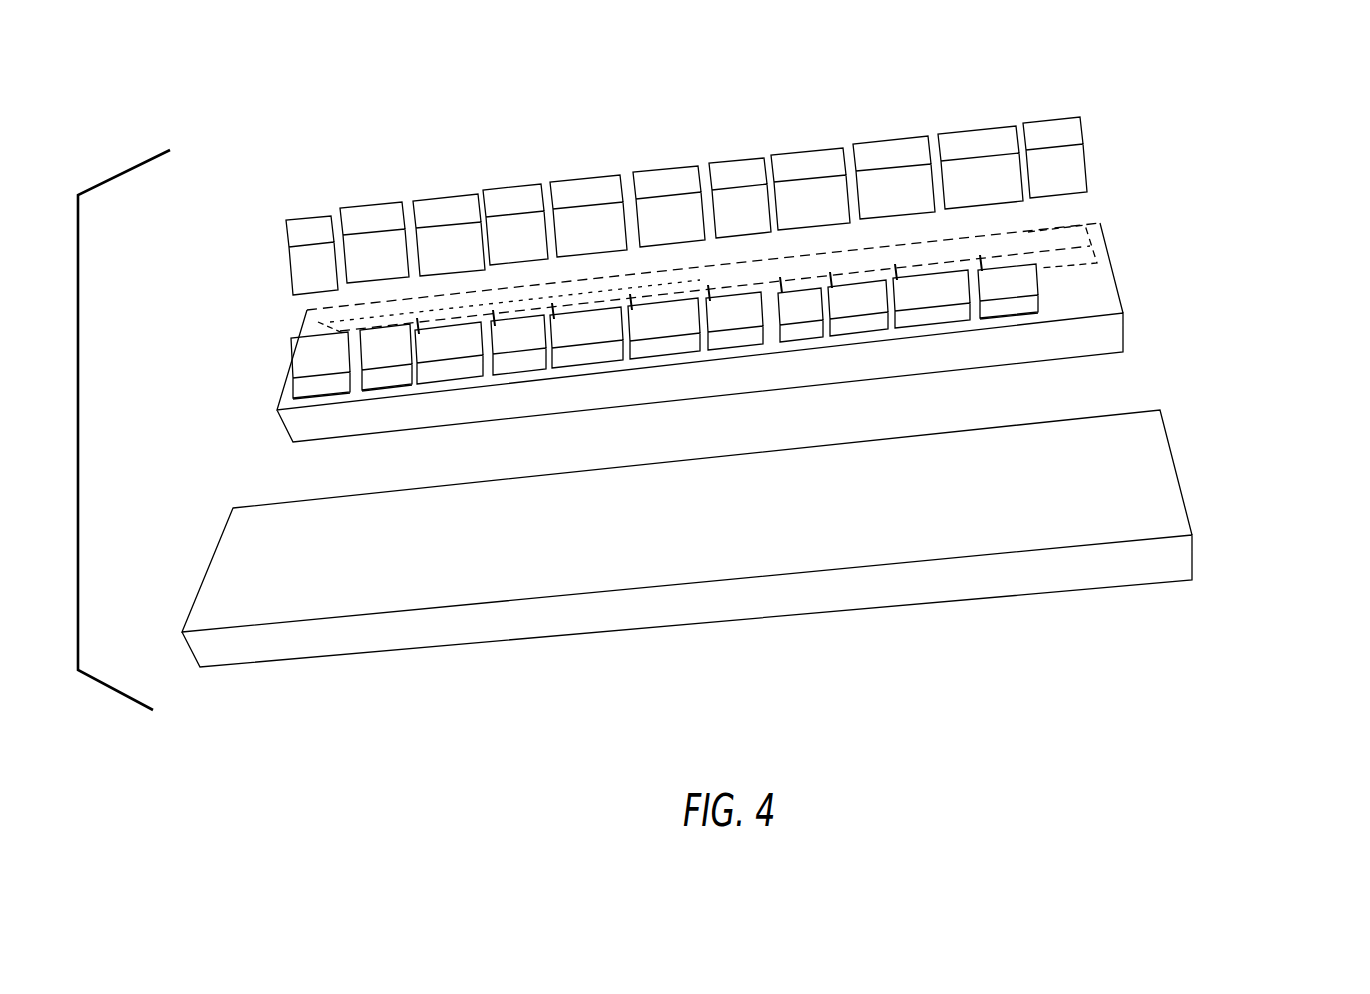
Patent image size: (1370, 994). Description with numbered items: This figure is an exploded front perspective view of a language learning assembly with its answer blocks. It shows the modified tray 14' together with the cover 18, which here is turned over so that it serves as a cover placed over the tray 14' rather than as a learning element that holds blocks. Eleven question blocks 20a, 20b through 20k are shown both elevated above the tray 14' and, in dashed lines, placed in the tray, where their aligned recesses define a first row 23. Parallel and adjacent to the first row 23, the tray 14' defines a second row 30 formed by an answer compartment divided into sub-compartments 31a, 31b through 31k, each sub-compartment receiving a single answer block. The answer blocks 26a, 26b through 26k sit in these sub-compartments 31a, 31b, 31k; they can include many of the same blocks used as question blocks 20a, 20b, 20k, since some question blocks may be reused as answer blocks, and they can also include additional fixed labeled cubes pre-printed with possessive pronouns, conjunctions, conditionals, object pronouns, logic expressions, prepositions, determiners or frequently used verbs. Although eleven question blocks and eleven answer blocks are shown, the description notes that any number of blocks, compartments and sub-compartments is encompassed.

The cover 18 is at (1213, 487).
The modified tray 14' is at (784, 279).
The first row 23 is at (232, 282).
The question block 20a is at (305, 223).
The question block 20b is at (375, 222).
The question block 20k is at (1057, 133).
The second row 30 is at (253, 388).
The answer block 26a is at (344, 393).
The answer block 26b is at (383, 387).
The answer block 26k is at (1013, 303).
The sub-compartment 31a is at (357, 390).
The sub-compartment 31b is at (402, 392).
The sub-compartment 31k is at (997, 313).